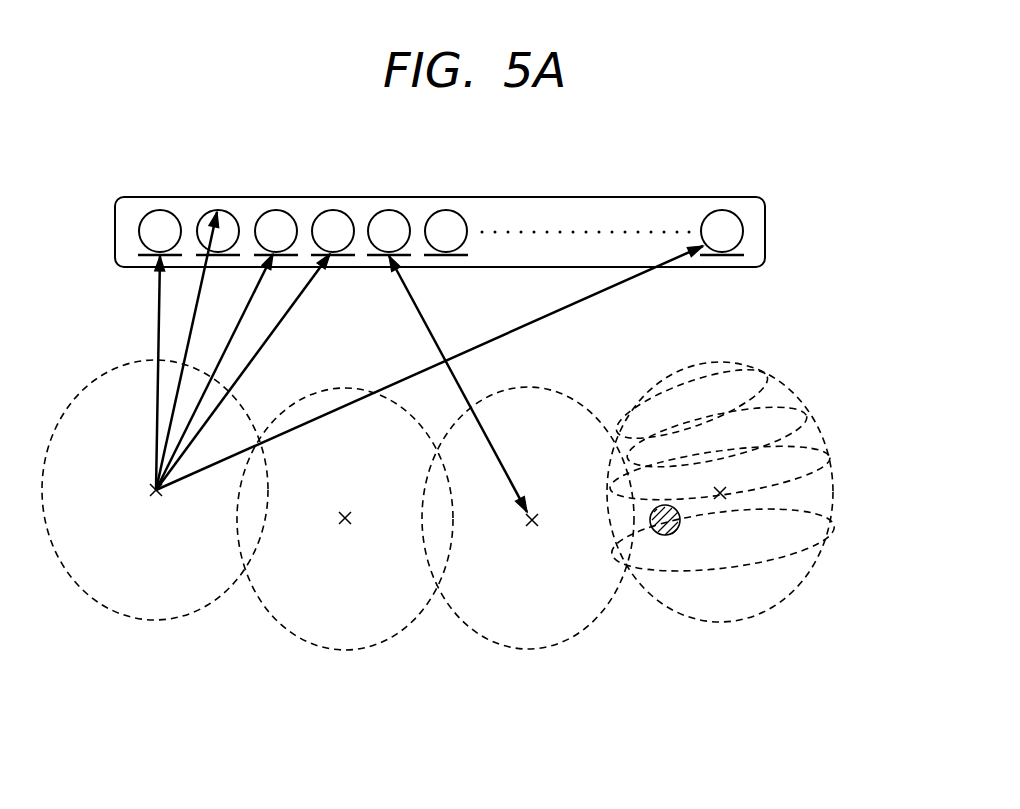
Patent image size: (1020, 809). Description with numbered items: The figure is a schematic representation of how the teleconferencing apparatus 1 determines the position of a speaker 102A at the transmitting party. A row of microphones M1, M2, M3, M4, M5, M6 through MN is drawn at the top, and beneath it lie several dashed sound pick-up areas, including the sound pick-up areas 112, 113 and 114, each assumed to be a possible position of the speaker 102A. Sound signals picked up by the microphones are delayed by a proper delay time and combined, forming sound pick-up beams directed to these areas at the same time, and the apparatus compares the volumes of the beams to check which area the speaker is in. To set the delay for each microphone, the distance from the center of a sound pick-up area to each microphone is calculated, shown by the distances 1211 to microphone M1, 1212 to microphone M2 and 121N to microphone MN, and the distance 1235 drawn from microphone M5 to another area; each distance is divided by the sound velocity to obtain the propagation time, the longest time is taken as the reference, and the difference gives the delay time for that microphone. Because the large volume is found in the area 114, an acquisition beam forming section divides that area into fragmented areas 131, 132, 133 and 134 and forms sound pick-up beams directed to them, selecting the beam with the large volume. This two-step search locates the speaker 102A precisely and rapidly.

The teleconferencing apparatus 1 is at (765, 233).
The microphone M1 is at (160, 210).
The microphone M2 is at (218, 210).
The microphone M3 is at (276, 210).
The microphone M4 is at (333, 210).
The microphone M5 is at (389, 210).
The microphone M6 is at (446, 210).
The microphone MN is at (722, 210).
The distance 1211 is at (156, 303).
The distance 1212 is at (180, 342).
The distance 121N is at (398, 382).
The distance 1235 is at (500, 460).
The sound pick-up area 112 is at (398, 628).
The sound pick-up area 113 is at (597, 628).
The sound pick-up area 114 is at (753, 511).
The fragmented area 131 is at (765, 400).
The fragmented area 132 is at (795, 443).
The fragmented area 133 is at (813, 487).
The fragmented area 134 is at (827, 538).
The speaker 102A is at (668, 535).